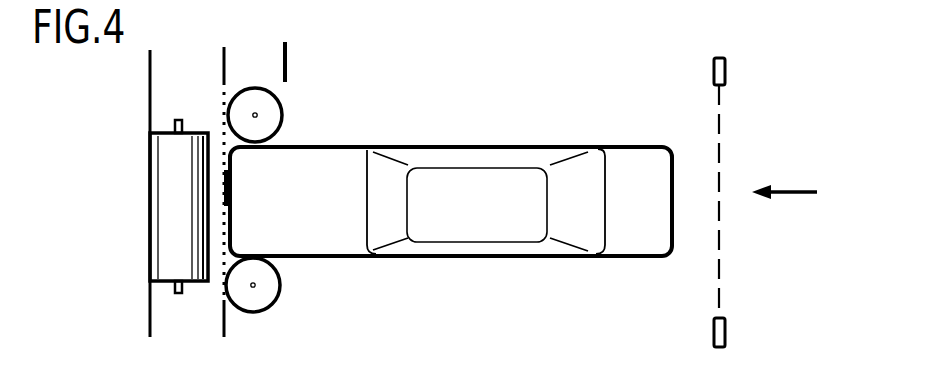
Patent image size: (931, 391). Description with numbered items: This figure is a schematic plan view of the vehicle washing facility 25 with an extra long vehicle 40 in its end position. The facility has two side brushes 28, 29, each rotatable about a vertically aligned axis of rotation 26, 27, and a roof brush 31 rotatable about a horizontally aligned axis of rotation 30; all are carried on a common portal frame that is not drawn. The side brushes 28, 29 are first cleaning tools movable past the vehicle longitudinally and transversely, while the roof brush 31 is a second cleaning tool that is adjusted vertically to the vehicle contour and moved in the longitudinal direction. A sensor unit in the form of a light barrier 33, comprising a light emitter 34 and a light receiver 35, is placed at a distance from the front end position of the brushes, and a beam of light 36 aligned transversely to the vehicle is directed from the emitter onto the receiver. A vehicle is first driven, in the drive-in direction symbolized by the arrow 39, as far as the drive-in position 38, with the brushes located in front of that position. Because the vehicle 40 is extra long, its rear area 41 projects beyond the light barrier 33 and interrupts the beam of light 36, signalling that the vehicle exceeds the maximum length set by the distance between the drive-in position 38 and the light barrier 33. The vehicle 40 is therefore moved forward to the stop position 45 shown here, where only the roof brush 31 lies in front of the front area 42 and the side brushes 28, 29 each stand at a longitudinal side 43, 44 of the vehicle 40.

The vehicle washing facility 25 is at (390, 101).
The axis of rotation 26 is at (258, 113).
The axis of rotation 27 is at (258, 285).
The side brush 28 is at (270, 120).
The side brush 29 is at (268, 306).
The axis of rotation 30 is at (173, 124).
The roof brush 31 is at (160, 160).
The light barrier 33 is at (740, 283).
The light emitter 34 is at (726, 330).
The light receiver 35 is at (727, 70).
The beam of light 36 is at (722, 117).
The drive-in position 38 is at (279, 58).
The arrow 39 is at (795, 191).
The extra long vehicle 40 is at (494, 131).
The rear area 41 is at (675, 172).
The front area 42 is at (228, 188).
The longitudinal side 43 is at (437, 146).
The longitudinal side 44 is at (430, 258).
The stop position 45 is at (223, 58).